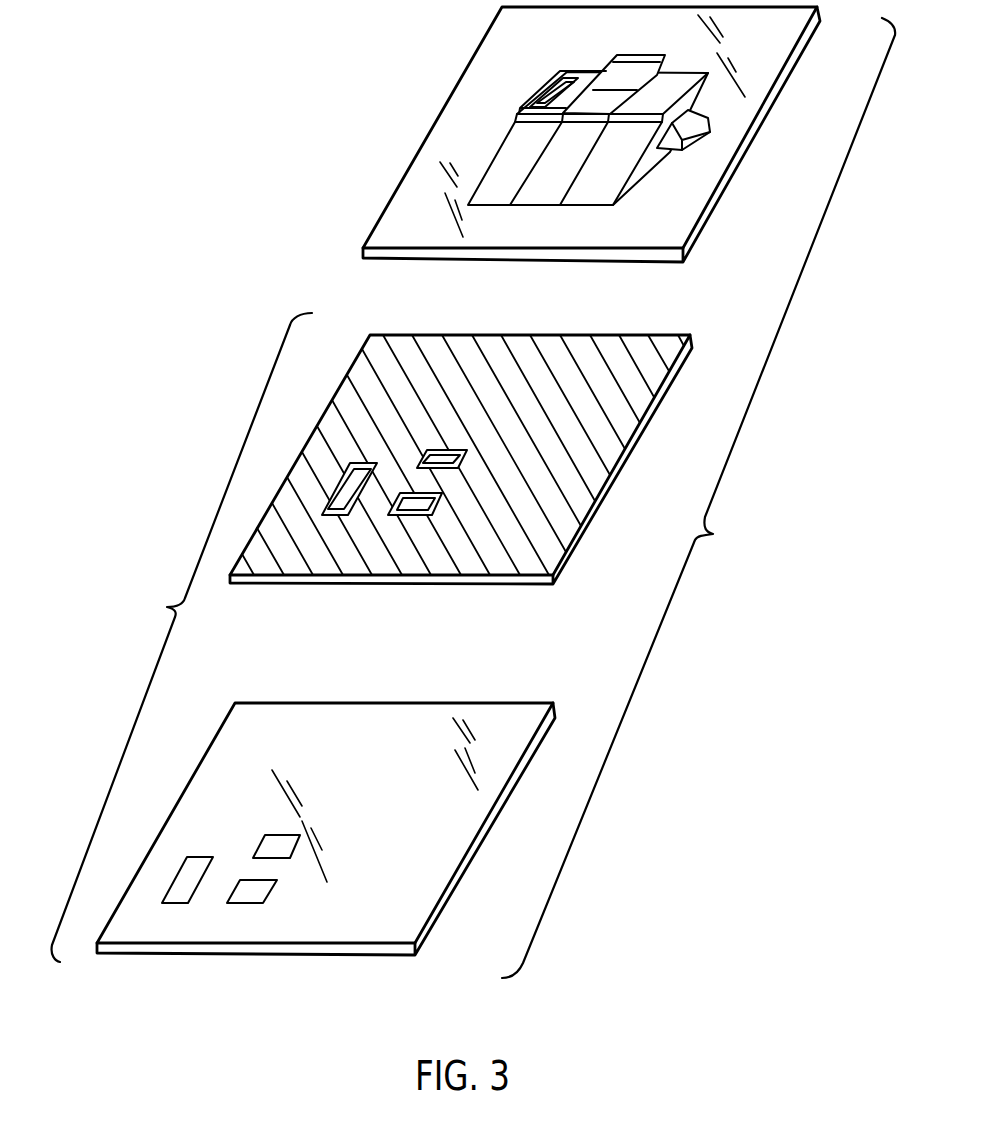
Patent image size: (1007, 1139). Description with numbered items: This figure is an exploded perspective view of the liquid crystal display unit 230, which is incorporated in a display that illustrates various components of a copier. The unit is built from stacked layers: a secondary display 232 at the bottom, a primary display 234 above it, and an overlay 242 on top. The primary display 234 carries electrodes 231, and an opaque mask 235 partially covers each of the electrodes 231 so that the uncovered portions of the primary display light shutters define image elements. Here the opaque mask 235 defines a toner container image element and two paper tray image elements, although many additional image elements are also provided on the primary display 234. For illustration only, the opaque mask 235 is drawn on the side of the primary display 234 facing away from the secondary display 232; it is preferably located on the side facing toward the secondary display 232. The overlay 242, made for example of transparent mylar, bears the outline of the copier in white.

The liquid crystal display unit 230 is at (474, 498).
The electrodes 231 is at (453, 470).
The secondary display 232 is at (462, 872).
The primary display 234 is at (625, 475).
The opaque mask 235 is at (557, 517).
The overlay 242 is at (722, 200).